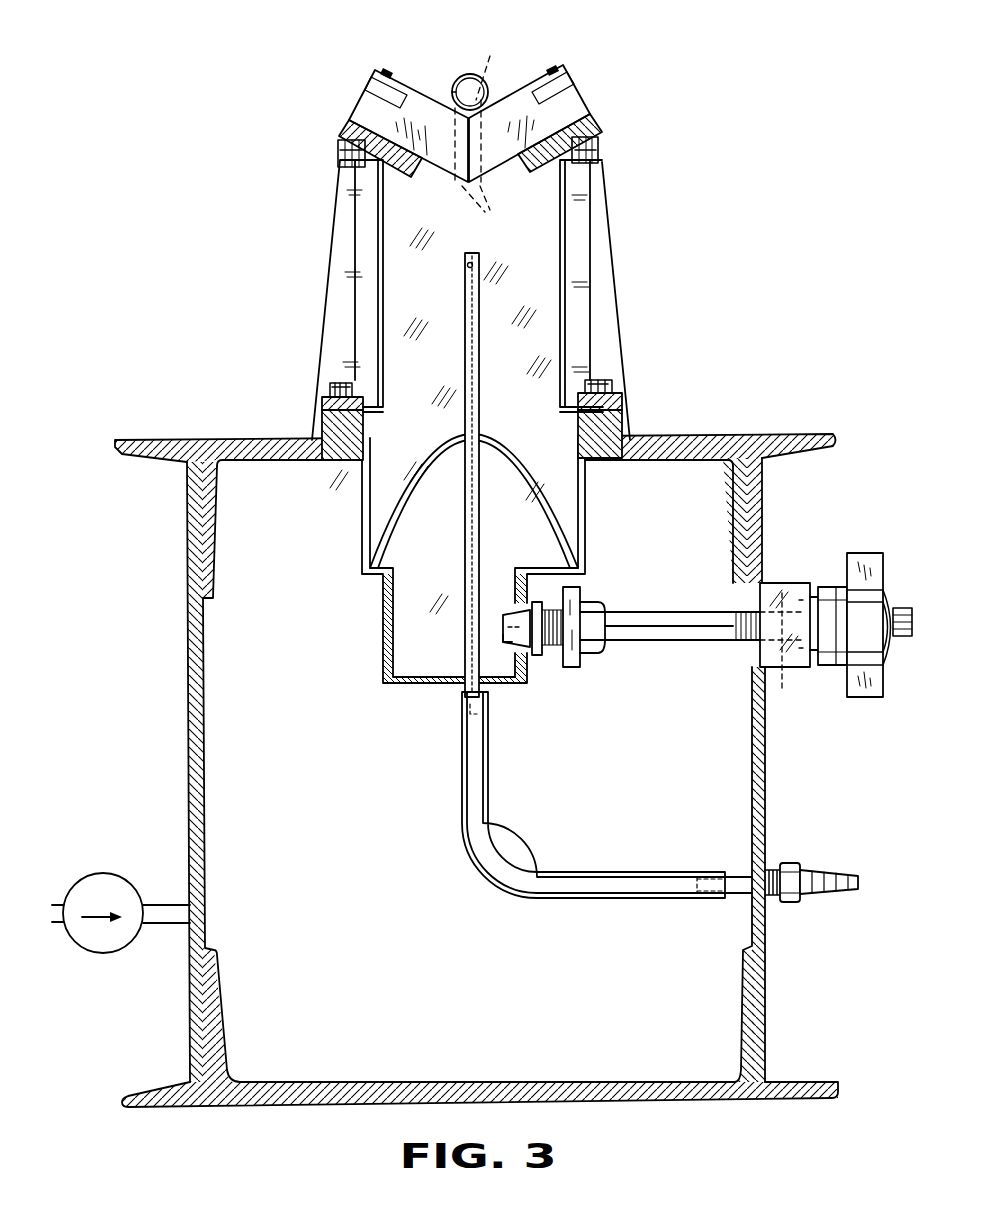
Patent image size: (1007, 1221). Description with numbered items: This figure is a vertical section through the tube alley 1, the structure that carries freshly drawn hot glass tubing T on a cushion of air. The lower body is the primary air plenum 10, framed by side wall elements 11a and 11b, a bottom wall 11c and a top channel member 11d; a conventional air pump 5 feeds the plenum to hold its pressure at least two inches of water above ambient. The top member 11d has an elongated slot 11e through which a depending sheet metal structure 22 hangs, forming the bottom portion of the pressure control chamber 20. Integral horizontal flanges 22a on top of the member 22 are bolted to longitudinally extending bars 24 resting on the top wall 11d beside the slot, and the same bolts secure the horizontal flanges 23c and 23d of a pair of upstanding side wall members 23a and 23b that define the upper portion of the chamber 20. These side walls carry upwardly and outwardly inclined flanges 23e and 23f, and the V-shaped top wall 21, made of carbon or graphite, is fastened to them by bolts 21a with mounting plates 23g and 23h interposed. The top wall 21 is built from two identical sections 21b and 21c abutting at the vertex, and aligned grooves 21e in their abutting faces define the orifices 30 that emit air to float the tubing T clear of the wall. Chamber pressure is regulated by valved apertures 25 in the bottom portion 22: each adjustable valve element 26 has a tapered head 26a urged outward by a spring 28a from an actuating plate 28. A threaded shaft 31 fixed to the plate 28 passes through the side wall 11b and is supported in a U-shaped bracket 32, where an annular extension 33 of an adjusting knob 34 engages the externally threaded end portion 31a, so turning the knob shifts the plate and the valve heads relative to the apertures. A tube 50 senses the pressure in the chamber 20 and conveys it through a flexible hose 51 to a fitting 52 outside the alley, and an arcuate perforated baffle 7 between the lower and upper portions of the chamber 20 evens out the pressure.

The tube alley 1 is at (476, 746).
The air pump 5 is at (104, 954).
The arcuate-shaped perforated baffle 7 is at (414, 488).
The primary air plenum 10 is at (304, 766).
The side wall frame element 11a is at (206, 838).
The side wall frame element 11b is at (750, 823).
The bottom wall frame element 11c is at (400, 1078).
The top wall channel member 11d is at (700, 436).
The elongated slot 11e is at (580, 462).
The pressure control chamber 20 is at (488, 387).
The top wall 21 is at (468, 121).
The bolts 21a is at (343, 165).
The top wall section 21b is at (420, 97).
The top wall section 21c is at (583, 85).
The grooves 21e is at (494, 218).
The depending sheet metal structure 22 is at (478, 526).
The horizontal flanges 22a is at (584, 428).
The upstanding side wall member 23a is at (381, 247).
The upstanding side wall member 23b is at (566, 260).
The horizontal flange 23c is at (356, 385).
The horizontal flange 23d is at (597, 387).
The inclined flange 23e is at (343, 143).
The inclined flange 23f is at (605, 152).
The mounting plate 23g is at (343, 127).
The mounting plate 23h is at (600, 118).
The longitudinally extending bars 24 is at (332, 421).
The valved aperture 25 is at (539, 655).
The adjustable valve element 26 is at (529, 619).
The tapered head 26a is at (505, 637).
The actuating plate 28 is at (577, 594).
The spring 28a is at (556, 652).
The orifices 30 is at (479, 68).
The threaded shaft 31 is at (758, 635).
The externally threaded end portion 31a is at (876, 665).
The shaft support bracket 32 is at (790, 582).
The annular extension 33 is at (795, 658).
The adjusting knob 34 is at (862, 693).
The tube 50 is at (481, 306).
The flexible hose 51 is at (540, 865).
The fitting 52 is at (790, 903).
The hot tubing T is at (458, 78).